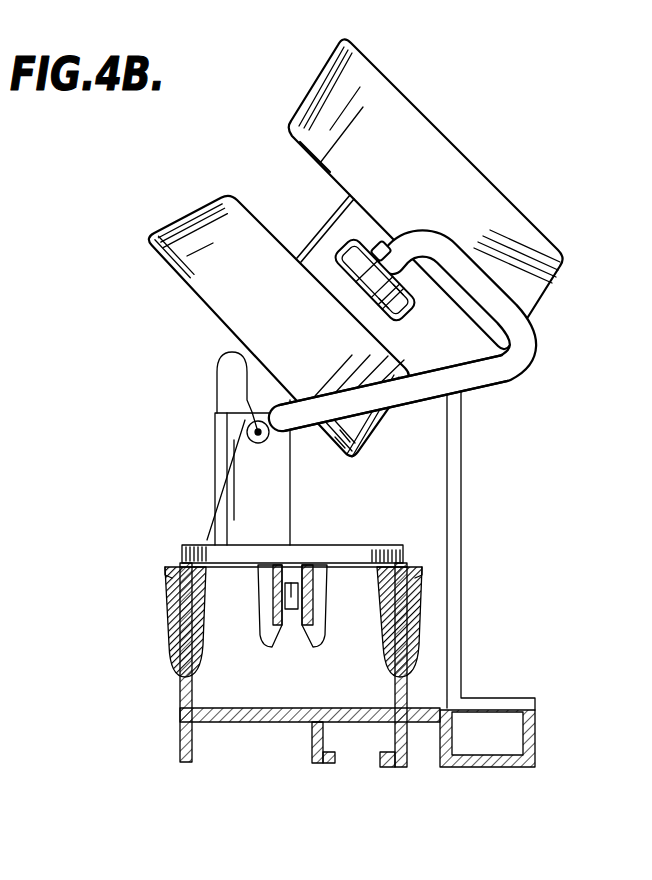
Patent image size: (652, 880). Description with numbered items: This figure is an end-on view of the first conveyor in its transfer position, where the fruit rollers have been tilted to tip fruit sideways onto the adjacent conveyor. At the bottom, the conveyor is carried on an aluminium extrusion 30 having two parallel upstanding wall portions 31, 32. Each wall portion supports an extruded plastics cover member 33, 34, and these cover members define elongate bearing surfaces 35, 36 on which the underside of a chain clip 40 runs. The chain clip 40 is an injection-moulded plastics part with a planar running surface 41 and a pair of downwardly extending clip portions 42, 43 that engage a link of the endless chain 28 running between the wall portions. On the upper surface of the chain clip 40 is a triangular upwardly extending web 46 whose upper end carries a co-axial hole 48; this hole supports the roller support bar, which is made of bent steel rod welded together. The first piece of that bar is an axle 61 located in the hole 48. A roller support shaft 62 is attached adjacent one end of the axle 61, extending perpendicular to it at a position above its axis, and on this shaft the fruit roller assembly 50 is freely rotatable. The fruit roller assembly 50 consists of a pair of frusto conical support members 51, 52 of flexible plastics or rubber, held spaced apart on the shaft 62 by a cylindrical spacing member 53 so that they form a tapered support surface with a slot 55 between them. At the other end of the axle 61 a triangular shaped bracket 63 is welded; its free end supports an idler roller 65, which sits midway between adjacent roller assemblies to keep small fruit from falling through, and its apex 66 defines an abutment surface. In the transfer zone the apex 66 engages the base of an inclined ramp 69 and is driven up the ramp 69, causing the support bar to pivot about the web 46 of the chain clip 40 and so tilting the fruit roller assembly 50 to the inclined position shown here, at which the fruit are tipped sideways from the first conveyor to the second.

The endless chain 28 is at (293, 597).
The aluminium extrusion 30 is at (247, 713).
The upstanding wall portion 31 is at (187, 655).
The upstanding wall portion 32 is at (400, 637).
The cover member 33 is at (170, 598).
The cover member 34 is at (412, 613).
The bearing surface 35 is at (175, 573).
The bearing surface 36 is at (415, 566).
The chain clip 40 is at (333, 481).
The planar running surface 41 is at (403, 552).
The clip portion 42 is at (257, 602).
The clip portion 43 is at (322, 620).
The upwardly extending web 46 is at (242, 513).
The co-axial hole 48 is at (247, 437).
The fruit roller assembly 50 is at (325, 248).
The frusto conical support member 51 is at (418, 166).
The frusto conical support member 52 is at (273, 323).
The cylindrical spacing member 53 is at (297, 258).
The slot 55 is at (293, 223).
The axle 61 is at (217, 410).
The roller support shaft 62 is at (217, 378).
The triangular shaped bracket 63 is at (470, 373).
The idler roller 65 is at (347, 300).
The apex 66 is at (527, 356).
The inclined ramp 69 is at (460, 463).